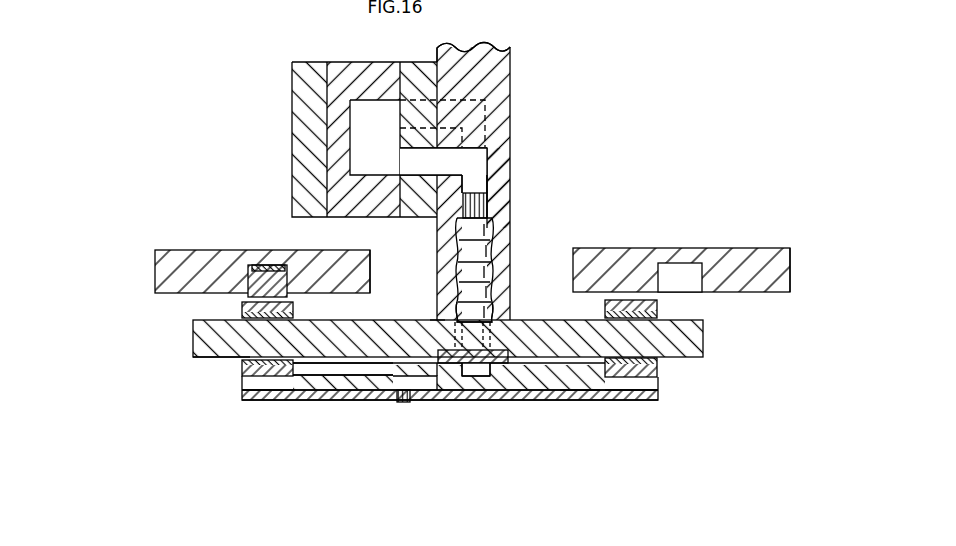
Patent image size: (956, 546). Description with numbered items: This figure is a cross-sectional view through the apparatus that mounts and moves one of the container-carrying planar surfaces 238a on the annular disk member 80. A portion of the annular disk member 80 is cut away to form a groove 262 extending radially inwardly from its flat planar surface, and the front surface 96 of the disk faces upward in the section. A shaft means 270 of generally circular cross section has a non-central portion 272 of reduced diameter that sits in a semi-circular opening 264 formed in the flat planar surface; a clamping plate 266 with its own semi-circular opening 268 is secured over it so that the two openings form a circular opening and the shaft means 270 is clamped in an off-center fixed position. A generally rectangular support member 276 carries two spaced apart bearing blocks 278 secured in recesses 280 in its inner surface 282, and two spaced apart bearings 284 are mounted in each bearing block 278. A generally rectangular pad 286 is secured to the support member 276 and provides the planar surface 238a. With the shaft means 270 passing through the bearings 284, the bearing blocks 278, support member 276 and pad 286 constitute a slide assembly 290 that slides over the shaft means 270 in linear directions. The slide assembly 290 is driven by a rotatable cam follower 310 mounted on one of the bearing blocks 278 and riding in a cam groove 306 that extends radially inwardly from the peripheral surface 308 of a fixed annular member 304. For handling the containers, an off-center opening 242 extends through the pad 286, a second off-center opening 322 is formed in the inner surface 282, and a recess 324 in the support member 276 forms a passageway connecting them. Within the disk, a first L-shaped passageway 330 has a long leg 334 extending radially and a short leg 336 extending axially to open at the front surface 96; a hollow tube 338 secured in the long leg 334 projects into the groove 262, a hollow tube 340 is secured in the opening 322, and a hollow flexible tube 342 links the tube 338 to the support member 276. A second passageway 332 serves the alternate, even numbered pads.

The annular disk member 80 is at (497, 62).
The front surface 96 is at (437, 53).
The second plurality of passageways 332 is at (505, 107).
The short leg 336 is at (438, 170).
The L-shaped passageways 330 is at (497, 181).
The long leg 334 is at (472, 186).
The hollow tube 338 is at (485, 210).
The groove 262 is at (493, 253).
The hollow flexible tube 342 is at (493, 283).
The annular member 304 is at (183, 255).
The cam groove 306 is at (270, 270).
The cam follower 310 is at (260, 266).
The peripheral surface 308 is at (363, 295).
The bearings 284 is at (242, 310).
The shaft means 270 is at (195, 338).
The semi-circular openings 264 is at (440, 328).
The non-central portion 272 is at (497, 342).
The support member 276 is at (648, 387).
The pad 286 is at (607, 396).
The bearing blocks 278 is at (242, 370).
The semi-circular opening 268 is at (403, 397).
The opening 242 is at (400, 369).
The inner surface 282 is at (324, 368).
The recesses 280 is at (258, 398).
The clamping plate 266 is at (428, 362).
The second off-center opening 322 is at (477, 380).
The recess 324 is at (470, 372).
The hollow tube 340 is at (485, 372).
The planar surface 238a is at (570, 393).
The slide assembly 290 is at (135, 430).